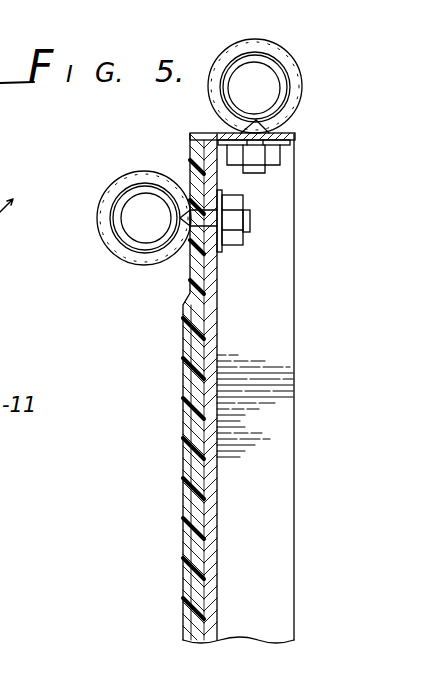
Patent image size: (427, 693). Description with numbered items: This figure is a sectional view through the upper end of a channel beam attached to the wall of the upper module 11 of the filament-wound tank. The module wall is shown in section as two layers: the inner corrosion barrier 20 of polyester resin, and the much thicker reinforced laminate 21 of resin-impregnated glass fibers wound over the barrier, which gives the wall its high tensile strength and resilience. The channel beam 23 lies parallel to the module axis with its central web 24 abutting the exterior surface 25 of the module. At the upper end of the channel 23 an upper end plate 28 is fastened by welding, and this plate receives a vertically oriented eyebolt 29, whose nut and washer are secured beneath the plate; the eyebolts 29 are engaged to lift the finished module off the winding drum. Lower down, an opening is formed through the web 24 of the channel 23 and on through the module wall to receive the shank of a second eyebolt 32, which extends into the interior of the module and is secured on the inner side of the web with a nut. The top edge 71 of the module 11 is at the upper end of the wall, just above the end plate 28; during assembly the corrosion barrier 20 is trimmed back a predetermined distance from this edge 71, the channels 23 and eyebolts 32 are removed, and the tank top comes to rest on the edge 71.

The upper module 11 is at (172, 396).
The corrosion barrier 20 is at (182, 474).
The reinforced laminate 21 is at (192, 597).
The channel beam 23 is at (295, 405).
The central web 24 is at (218, 315).
The exterior surface 25 is at (216, 560).
The upper end plate 28 is at (283, 133).
The eyebolt 29 is at (296, 70).
The eyebolt 32 is at (135, 262).
The top edge 71 is at (193, 133).